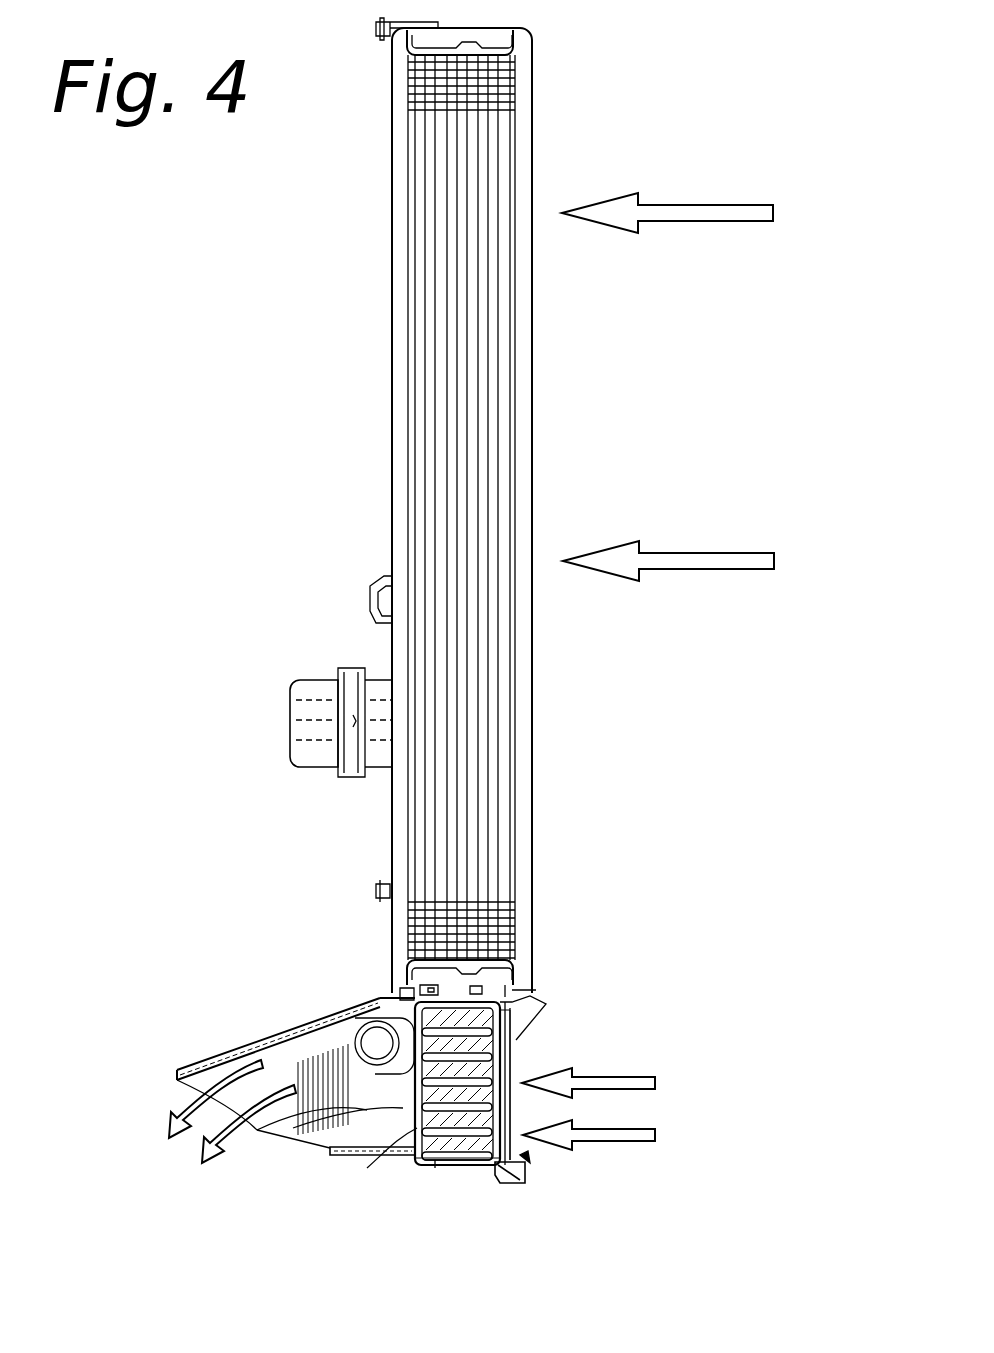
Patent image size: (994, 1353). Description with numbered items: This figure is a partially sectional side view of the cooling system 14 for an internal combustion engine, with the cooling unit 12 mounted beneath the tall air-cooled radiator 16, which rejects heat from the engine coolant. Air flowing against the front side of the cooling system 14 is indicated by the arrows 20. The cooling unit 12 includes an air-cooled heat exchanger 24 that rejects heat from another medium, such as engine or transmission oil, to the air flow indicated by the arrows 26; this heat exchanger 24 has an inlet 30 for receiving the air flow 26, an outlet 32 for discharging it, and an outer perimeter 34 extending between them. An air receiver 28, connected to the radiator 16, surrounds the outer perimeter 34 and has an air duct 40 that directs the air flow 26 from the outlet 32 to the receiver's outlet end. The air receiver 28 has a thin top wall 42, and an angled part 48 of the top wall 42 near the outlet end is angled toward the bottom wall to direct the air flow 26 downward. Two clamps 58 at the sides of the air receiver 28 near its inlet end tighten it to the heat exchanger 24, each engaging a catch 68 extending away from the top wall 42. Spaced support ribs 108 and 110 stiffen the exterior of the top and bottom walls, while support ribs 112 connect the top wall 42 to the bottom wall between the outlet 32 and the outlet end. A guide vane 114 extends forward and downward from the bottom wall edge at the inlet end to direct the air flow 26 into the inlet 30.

The cooling unit 12 is at (524, 1159).
The cooling system 14 is at (558, 113).
The radiator 16 is at (497, 427).
The arrows 20 is at (698, 214).
The heat exchanger 24 is at (503, 1037).
The arrows 26 is at (625, 1092).
The air receiver 28 is at (374, 1164).
The inlet 30 is at (510, 1127).
The outlet 32 is at (339, 1115).
The outer perimeter 34 is at (470, 1167).
The air duct 40 is at (365, 1148).
The top wall 42 is at (385, 990).
The angled part 48 is at (224, 1052).
The clamps 58 is at (497, 1060).
The catch 68 is at (540, 985).
The support ribs 108 is at (273, 1029).
The support ribs 110 is at (360, 1157).
The support ribs 112 is at (277, 1130).
The guide vane 114 is at (507, 1183).